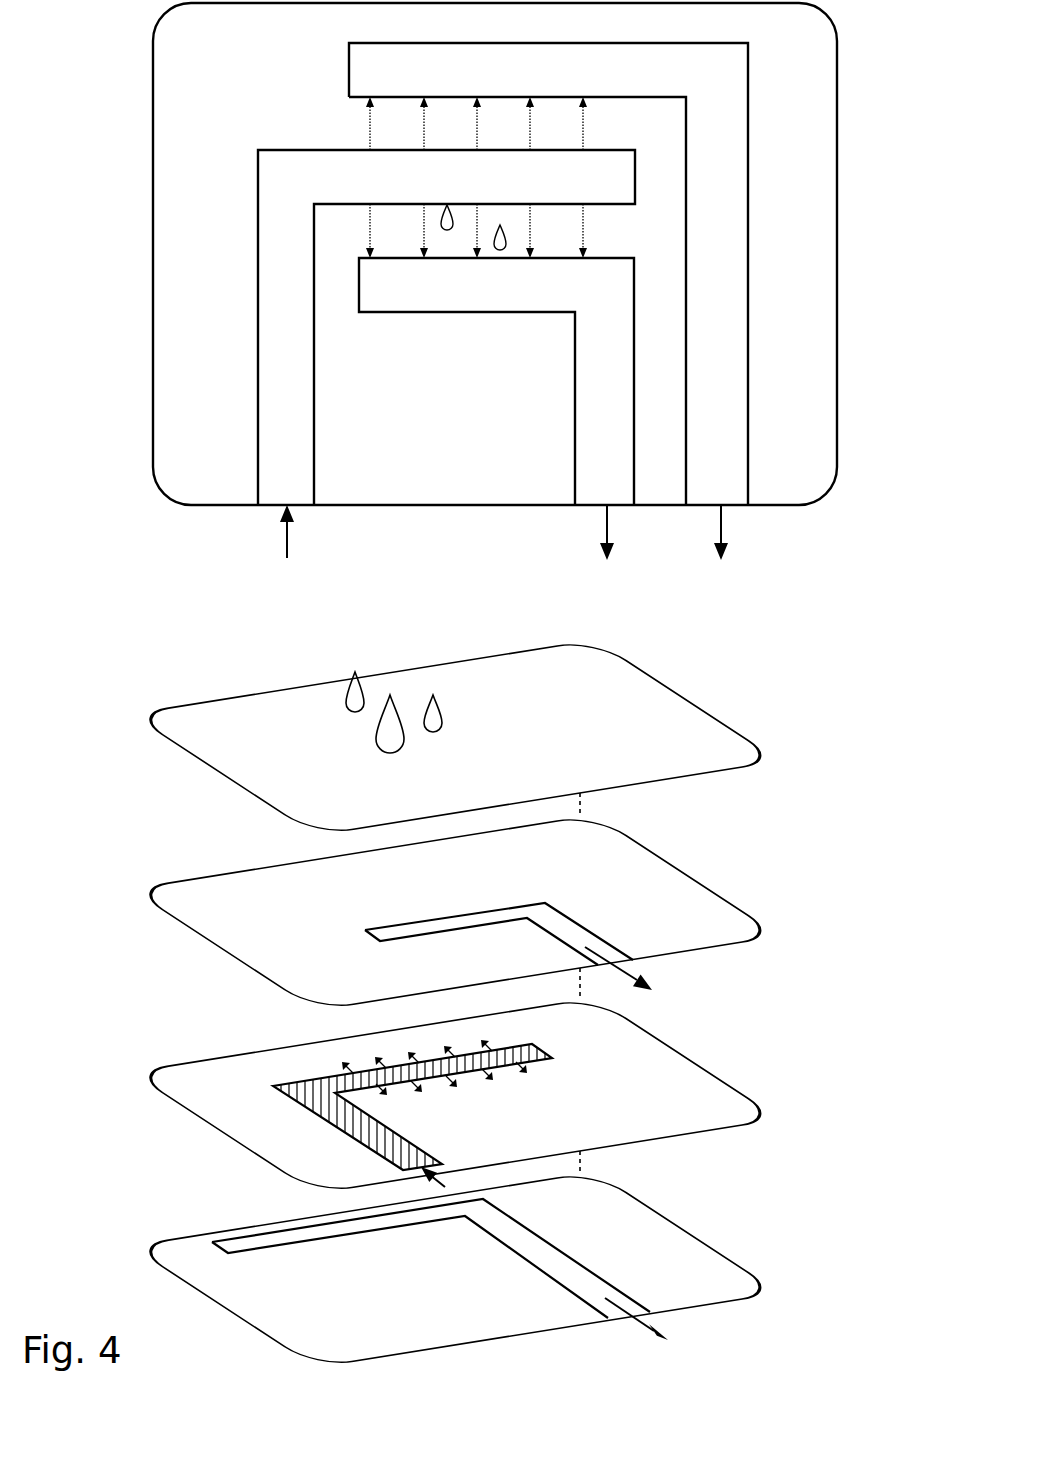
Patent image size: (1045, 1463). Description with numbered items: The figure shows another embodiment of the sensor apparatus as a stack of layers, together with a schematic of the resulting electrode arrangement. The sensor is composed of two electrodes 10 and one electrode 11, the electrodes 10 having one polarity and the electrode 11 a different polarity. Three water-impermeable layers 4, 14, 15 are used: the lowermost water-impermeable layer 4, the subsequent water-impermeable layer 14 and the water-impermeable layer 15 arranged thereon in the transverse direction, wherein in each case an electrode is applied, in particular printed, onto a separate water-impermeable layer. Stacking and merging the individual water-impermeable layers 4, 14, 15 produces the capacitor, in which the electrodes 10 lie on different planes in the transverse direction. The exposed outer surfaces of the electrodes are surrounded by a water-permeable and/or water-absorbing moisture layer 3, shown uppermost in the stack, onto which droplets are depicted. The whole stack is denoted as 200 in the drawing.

The moisture layer 3 is at (822, 223).
The water-impermeable layer 4 is at (698, 1258).
The water-impermeable layer 15 is at (712, 910).
The water-impermeable layer 14 is at (705, 1090).
The electrode 10 is at (588, 490).
The electrode 11 is at (271, 490).
The method 200 is at (814, 781).